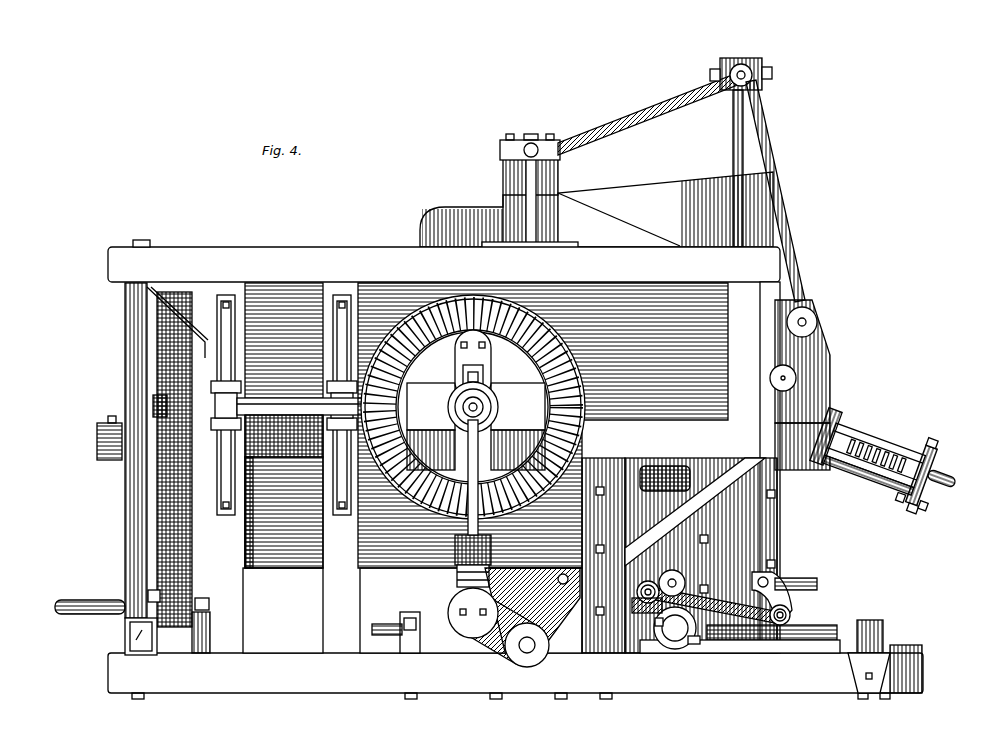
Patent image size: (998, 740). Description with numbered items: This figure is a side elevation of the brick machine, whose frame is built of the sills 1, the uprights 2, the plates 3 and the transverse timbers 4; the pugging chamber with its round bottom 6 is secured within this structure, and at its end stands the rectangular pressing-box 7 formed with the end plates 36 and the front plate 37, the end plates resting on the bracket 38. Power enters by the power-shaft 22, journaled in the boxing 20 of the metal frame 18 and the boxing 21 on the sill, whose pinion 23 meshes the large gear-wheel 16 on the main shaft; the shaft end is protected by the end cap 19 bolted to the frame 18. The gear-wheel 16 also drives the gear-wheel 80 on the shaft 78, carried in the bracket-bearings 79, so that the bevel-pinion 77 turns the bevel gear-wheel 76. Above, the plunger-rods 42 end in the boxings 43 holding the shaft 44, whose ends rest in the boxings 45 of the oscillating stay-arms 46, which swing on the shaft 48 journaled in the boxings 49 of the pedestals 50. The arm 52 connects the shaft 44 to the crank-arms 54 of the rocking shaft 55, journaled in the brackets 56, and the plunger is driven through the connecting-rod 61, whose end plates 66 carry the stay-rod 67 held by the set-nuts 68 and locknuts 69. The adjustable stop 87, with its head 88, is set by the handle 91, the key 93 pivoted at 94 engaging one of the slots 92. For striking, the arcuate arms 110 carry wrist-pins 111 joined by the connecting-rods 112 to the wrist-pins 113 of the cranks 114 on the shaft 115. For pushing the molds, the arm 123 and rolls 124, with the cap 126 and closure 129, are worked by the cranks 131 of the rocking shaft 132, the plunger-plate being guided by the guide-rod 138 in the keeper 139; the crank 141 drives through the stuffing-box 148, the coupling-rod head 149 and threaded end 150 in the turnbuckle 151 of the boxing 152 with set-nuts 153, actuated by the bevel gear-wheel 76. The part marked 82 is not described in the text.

The sills 1 is at (446, 685).
The uprights 2 is at (401, 474).
The plates 3 is at (444, 261).
The transverse timbers 4 is at (209, 486).
The round bottom 6 is at (293, 568).
The pressing-box 7 is at (770, 524).
The gear-wheel 16 is at (160, 522).
The metal frame 18 is at (125, 496).
The end cap 19 is at (97, 443).
The boxing 20 is at (150, 593).
The boxing 21 is at (205, 604).
The power-shaft 22 is at (76, 603).
The pinion 23 is at (172, 630).
The end plates 36 is at (778, 548).
The front plate 37 is at (603, 555).
The bracket 38 is at (690, 466).
The plunger-rods 42 is at (733, 147).
The boxings 43 is at (738, 58).
The shaft 44 is at (710, 74).
The boxings 45 is at (772, 72).
The stay-arms 46 is at (620, 115).
The shaft 48 is at (534, 134).
The boxings 49 is at (518, 138).
The pedestals 50 is at (506, 176).
The arm 52 is at (776, 152).
The crank-arms 54 is at (812, 354).
The rocking shaft 55 is at (797, 378).
The brackets 56 is at (812, 340).
The connecting-rod 61 is at (870, 426).
The plates 66 is at (908, 518).
The stay-rod 67 is at (862, 465).
The set-nuts 68 is at (927, 520).
The locknuts 69 is at (914, 474).
The bevel gear-wheel 76 is at (470, 295).
The bevel-pinion 77 is at (431, 426).
The shaft 78 is at (292, 398).
The bracket-bearings 79 is at (250, 420).
The gear-wheel 80 is at (158, 403).
The rail 82 is at (815, 627).
The adjustable stop 87 is at (830, 468).
The head 88 is at (828, 410).
The handle 91 is at (952, 436).
The slots 92 is at (884, 430).
The key 93 is at (930, 412).
The pivot 94 is at (922, 406).
The arcuate arms 110 is at (786, 580).
The wrist-pins 111 is at (792, 614).
The connecting-rods 112 is at (735, 628).
The wrist-pins 113 is at (658, 628).
The cranks 114 is at (660, 580).
The shaft 115 is at (680, 640).
The arm 123 is at (636, 612).
The rolls 124 is at (640, 600).
The cap 126 is at (672, 640).
The closure 129 is at (694, 646).
The cranks 131 is at (546, 602).
The rocking shaft 132 is at (533, 654).
The guide-rod 138 is at (440, 630).
The keeper 139 is at (428, 614).
The crank 141 is at (500, 629).
The stuffing-box 148 is at (497, 574).
The head 149 is at (457, 578).
The threaded end 150 is at (483, 378).
The turnbuckle 151 is at (473, 458).
The boxing 152 is at (473, 365).
The set-nuts 153 is at (468, 376).